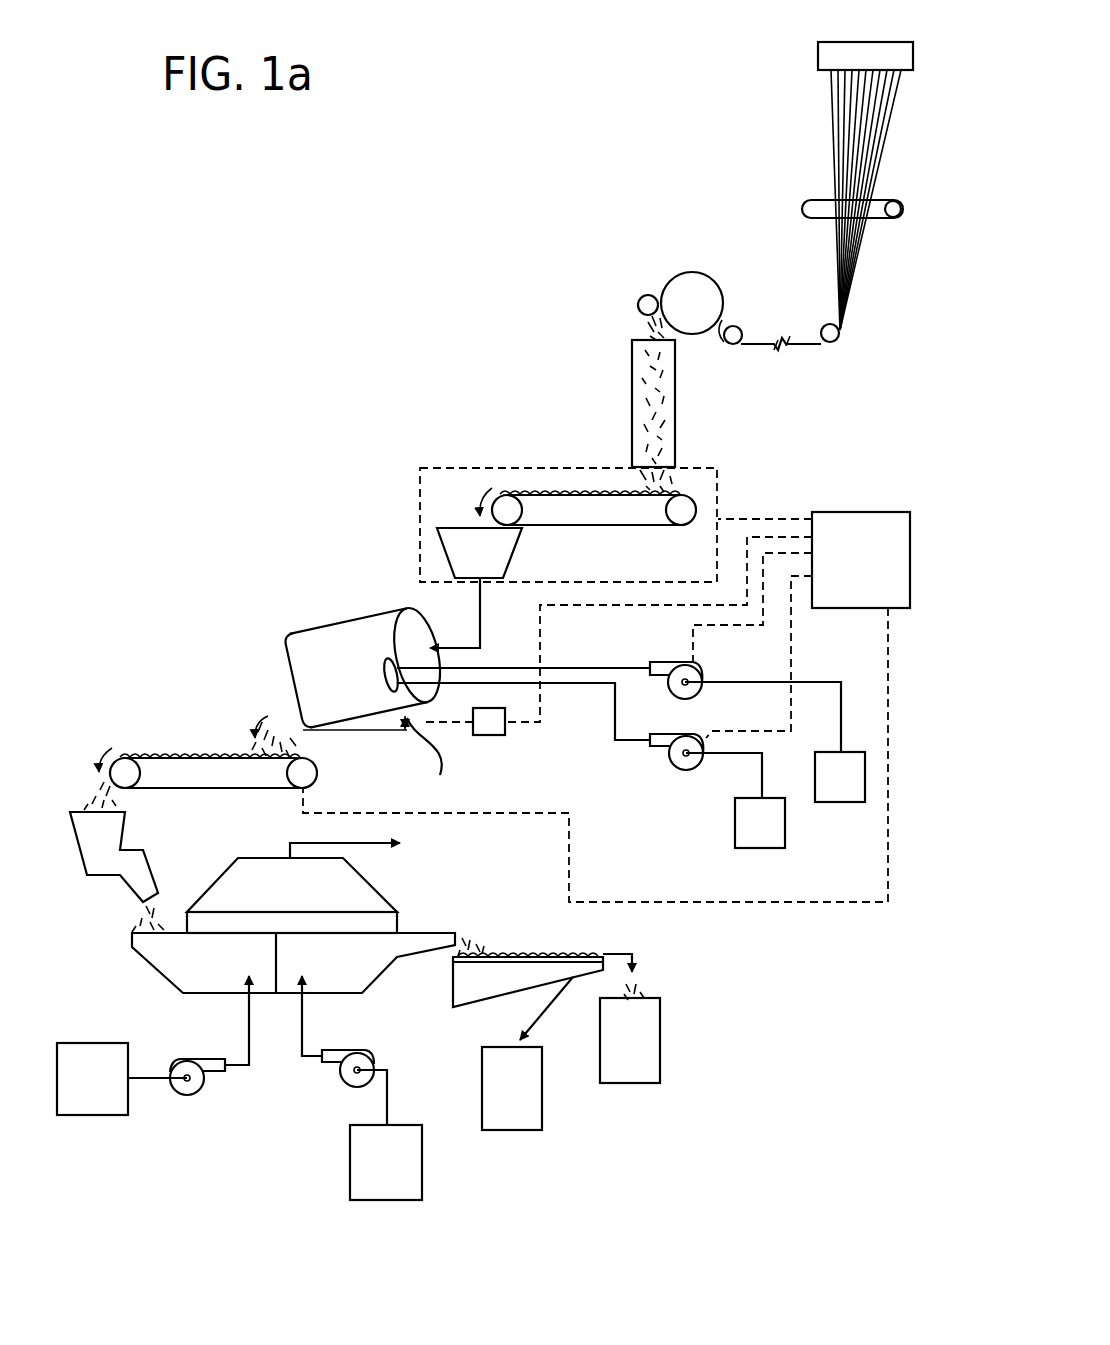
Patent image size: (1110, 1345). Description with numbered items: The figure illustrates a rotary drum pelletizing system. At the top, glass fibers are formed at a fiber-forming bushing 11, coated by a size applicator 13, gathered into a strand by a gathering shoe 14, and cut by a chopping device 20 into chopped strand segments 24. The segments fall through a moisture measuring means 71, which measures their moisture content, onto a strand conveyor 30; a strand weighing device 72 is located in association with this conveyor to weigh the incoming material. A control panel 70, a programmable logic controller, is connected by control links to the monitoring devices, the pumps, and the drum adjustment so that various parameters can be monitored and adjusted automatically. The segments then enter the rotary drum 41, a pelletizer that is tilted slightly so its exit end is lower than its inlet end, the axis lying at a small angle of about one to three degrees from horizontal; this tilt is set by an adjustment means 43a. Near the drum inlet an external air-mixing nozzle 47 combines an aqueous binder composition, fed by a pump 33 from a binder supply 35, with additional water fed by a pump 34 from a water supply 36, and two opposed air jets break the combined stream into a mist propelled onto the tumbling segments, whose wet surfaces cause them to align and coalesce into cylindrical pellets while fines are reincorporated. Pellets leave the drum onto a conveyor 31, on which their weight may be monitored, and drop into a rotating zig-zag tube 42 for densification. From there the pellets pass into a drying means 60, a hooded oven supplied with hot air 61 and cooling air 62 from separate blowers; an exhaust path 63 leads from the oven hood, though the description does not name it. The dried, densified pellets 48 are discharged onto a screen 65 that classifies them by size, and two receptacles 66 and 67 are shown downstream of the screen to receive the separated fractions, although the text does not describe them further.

The fiber-forming bushing 11 is at (818, 55).
The size applicator 13 is at (805, 205).
The gathering shoe 14 is at (838, 343).
The chopping device 20 is at (676, 262).
The chopped strand segments 24 is at (652, 323).
The moisture measuring means 71 is at (677, 397).
The strand conveyor 30 is at (693, 497).
The strand weighing device 72 is at (476, 588).
The control panel 70 is at (606, 707).
The rotary drum 41 is at (312, 633).
The external air-mixing nozzle 47 is at (386, 668).
The adjustment means 43a is at (490, 735).
The pump 34 is at (700, 672).
The pump 33 is at (673, 762).
The binder supply 35 is at (760, 823).
The water supply 36 is at (840, 777).
The conveyor 31 is at (122, 750).
The rotating zig-zag tube 42 is at (122, 828).
The drying means 60 is at (412, 932).
The exhaust outlet 63 is at (388, 842).
The densified pellets 48 is at (478, 950).
The screen 65 is at (585, 955).
The collection bin 66 is at (630, 1040).
The collection bin 67 is at (512, 1088).
The hot air 61 is at (153, 1072).
The cooling air 62 is at (362, 1115).